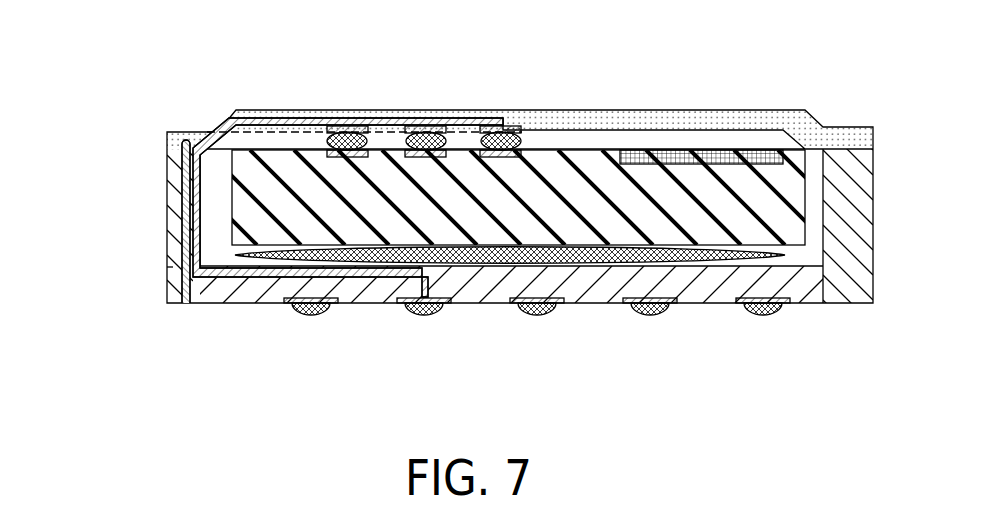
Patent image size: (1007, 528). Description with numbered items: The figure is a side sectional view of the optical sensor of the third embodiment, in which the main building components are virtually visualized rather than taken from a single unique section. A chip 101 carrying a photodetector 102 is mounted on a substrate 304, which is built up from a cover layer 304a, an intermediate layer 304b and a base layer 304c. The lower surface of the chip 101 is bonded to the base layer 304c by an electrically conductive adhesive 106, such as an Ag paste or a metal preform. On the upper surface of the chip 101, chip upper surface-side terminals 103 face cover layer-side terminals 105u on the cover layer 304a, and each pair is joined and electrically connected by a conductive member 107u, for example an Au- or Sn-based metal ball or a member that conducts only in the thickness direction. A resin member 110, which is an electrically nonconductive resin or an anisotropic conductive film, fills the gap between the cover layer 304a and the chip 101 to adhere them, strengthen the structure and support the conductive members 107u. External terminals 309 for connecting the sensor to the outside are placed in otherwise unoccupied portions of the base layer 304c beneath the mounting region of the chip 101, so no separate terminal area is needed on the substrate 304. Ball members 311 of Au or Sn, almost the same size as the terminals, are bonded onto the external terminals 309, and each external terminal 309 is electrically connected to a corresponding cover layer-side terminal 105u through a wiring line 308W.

The chip 101 is at (602, 150).
The photodetector 102 is at (657, 150).
The chip upper surface-side terminals 103 is at (349, 157).
The cover layer-side terminals 105u is at (347, 132).
The adhesive 106 is at (707, 264).
The conductive member 107u is at (334, 125).
The resin member 110 is at (270, 138).
The substrate 304 is at (84, 125).
The cover layer 304a is at (167, 142).
The intermediate layer 304b is at (167, 198).
The base layer 304c is at (167, 276).
The wiring line 308W is at (256, 113).
The external terminals 309 is at (336, 304).
The ball members 311 is at (305, 316).